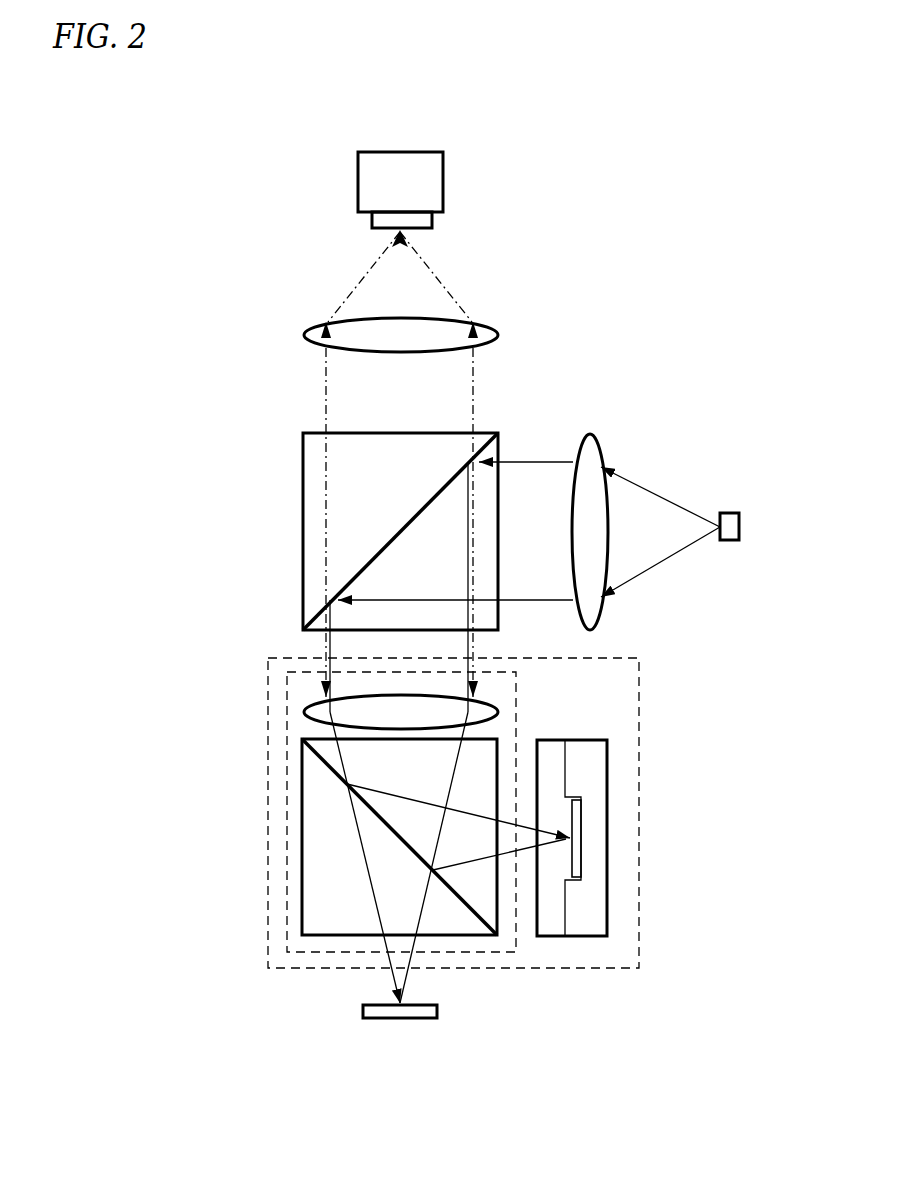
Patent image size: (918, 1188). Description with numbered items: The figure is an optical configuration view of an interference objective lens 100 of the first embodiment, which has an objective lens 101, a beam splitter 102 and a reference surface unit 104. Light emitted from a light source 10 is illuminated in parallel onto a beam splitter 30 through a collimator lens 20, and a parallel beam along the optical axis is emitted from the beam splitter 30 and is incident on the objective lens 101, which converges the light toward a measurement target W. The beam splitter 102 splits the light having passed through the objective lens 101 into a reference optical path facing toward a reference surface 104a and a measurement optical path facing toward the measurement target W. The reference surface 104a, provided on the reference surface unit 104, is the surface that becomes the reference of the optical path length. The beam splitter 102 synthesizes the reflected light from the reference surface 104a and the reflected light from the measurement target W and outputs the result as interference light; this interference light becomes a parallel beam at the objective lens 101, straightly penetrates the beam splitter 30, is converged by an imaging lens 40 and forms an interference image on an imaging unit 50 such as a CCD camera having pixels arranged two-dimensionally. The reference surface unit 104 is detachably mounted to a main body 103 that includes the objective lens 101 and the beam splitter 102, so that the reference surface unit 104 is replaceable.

The imaging unit 50 is at (283, 188).
The imaging lens 40 is at (310, 325).
The beam splitter 30 is at (310, 531).
The collimator lens 20 is at (592, 436).
The light source 10 is at (733, 513).
The interference objective lens 100 is at (376, 774).
The objective lens 101 is at (306, 700).
The beam splitter 102 is at (305, 837).
The main body 103 is at (315, 812).
The reference surface unit 104 is at (590, 740).
The reference surface 104a is at (686, 861).
The measurement target W is at (322, 998).